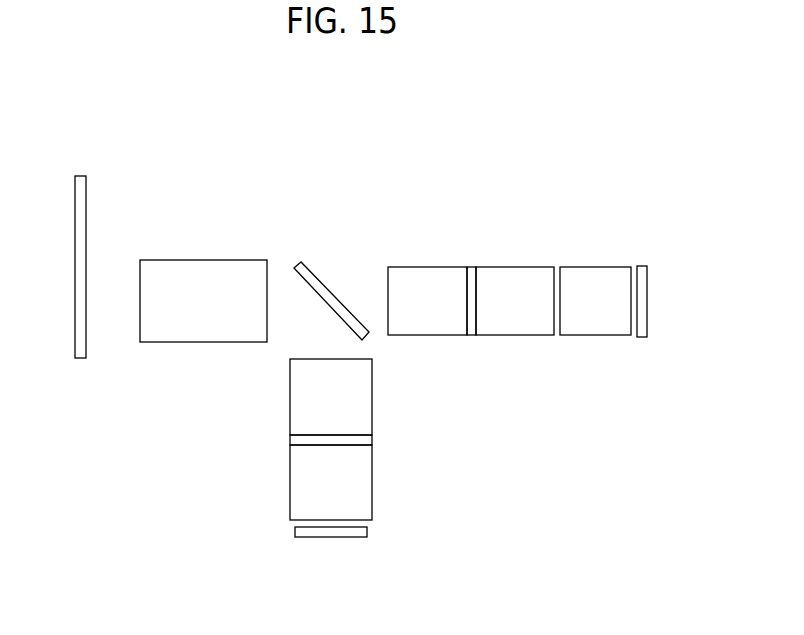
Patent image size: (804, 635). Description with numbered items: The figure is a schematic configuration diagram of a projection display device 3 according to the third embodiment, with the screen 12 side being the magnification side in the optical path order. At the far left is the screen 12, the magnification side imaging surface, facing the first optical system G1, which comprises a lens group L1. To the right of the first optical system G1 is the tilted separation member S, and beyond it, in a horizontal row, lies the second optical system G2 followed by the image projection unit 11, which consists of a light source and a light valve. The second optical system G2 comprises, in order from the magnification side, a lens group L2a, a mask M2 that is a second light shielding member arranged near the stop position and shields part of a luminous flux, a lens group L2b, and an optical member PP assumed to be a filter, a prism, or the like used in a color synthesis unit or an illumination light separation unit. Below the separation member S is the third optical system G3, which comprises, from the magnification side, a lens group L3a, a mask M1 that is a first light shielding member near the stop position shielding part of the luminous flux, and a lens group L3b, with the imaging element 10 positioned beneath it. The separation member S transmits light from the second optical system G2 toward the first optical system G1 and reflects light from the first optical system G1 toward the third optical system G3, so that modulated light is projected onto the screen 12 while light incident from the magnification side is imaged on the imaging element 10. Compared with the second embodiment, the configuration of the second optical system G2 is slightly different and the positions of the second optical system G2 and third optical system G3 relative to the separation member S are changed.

The projection display device 3 is at (349, 139).
The screen 12 is at (80, 302).
The first optical system G1 is at (230, 187).
The lens group L1 is at (205, 258).
The separation member S is at (329, 283).
The second optical system G2 is at (650, 187).
The lens group L2a is at (428, 265).
The mask M2 is at (472, 265).
The lens group L2b is at (515, 265).
The optical member PP is at (598, 265).
The image projection unit 11 is at (648, 315).
The third optical system G3 is at (474, 373).
The lens group L3a is at (373, 388).
The mask M1 is at (373, 440).
The lens group L3b is at (373, 487).
The imaging element 10 is at (311, 538).